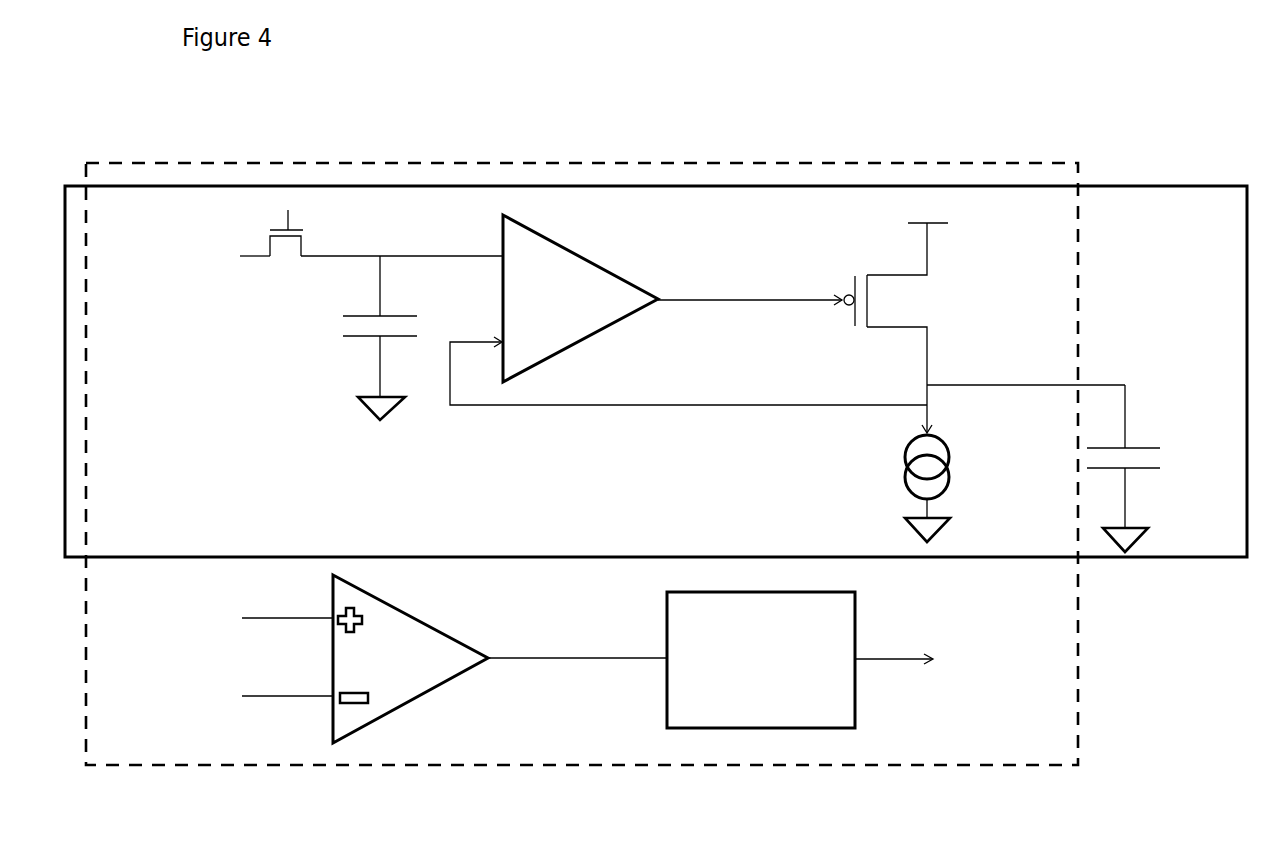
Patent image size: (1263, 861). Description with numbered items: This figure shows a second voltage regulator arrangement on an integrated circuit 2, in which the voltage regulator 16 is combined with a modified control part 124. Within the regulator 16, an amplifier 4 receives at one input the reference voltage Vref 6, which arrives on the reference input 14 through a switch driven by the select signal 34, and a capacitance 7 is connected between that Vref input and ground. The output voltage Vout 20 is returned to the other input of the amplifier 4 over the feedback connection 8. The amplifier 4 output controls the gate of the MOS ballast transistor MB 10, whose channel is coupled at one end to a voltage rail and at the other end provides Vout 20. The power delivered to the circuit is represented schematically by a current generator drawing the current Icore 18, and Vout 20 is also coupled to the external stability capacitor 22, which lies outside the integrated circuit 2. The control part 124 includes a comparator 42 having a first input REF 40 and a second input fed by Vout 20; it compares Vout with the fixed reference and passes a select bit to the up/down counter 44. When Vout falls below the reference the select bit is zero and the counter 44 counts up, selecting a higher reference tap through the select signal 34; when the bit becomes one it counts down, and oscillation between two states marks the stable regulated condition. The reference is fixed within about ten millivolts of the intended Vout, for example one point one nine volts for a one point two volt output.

The integrated circuit 2 is at (380, 162).
The voltage regulator 16 is at (1123, 186).
The control part 124 is at (555, 765).
The reference input Ref 7:0 14 is at (190, 275).
The select signal 34 is at (292, 219).
The reference voltage Vref 6 is at (457, 256).
The capacitance C1 7 is at (390, 313).
The amplifier 4 is at (583, 340).
The feedback input 8 is at (477, 341).
The MOS ballast transistor MB 10 is at (887, 275).
The output voltage Vout 20 is at (1026, 385).
The current Icore 18 is at (948, 477).
The external stability capacitor Cstab 22 is at (1147, 448).
The comparator 42 is at (413, 617).
The first input REF1 40 is at (288, 618).
The up/down counter 44 is at (667, 603).